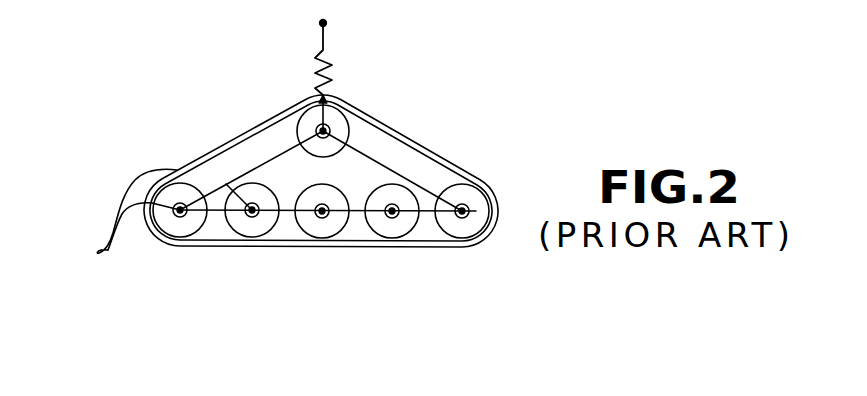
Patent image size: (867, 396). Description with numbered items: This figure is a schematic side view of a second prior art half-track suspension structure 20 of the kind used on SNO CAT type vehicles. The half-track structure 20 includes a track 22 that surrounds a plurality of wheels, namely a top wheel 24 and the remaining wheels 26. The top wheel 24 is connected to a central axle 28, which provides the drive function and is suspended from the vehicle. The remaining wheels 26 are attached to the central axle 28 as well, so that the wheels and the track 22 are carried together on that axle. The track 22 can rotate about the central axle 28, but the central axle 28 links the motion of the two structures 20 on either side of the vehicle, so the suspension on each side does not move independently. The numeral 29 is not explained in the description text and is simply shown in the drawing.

The half-track structure 20 is at (180, 87).
The track 22 is at (202, 157).
The top wheel 24 is at (346, 133).
The remaining wheels 26 is at (175, 247).
The central axle 28 is at (338, 113).
The roller axles 29 is at (322, 211).